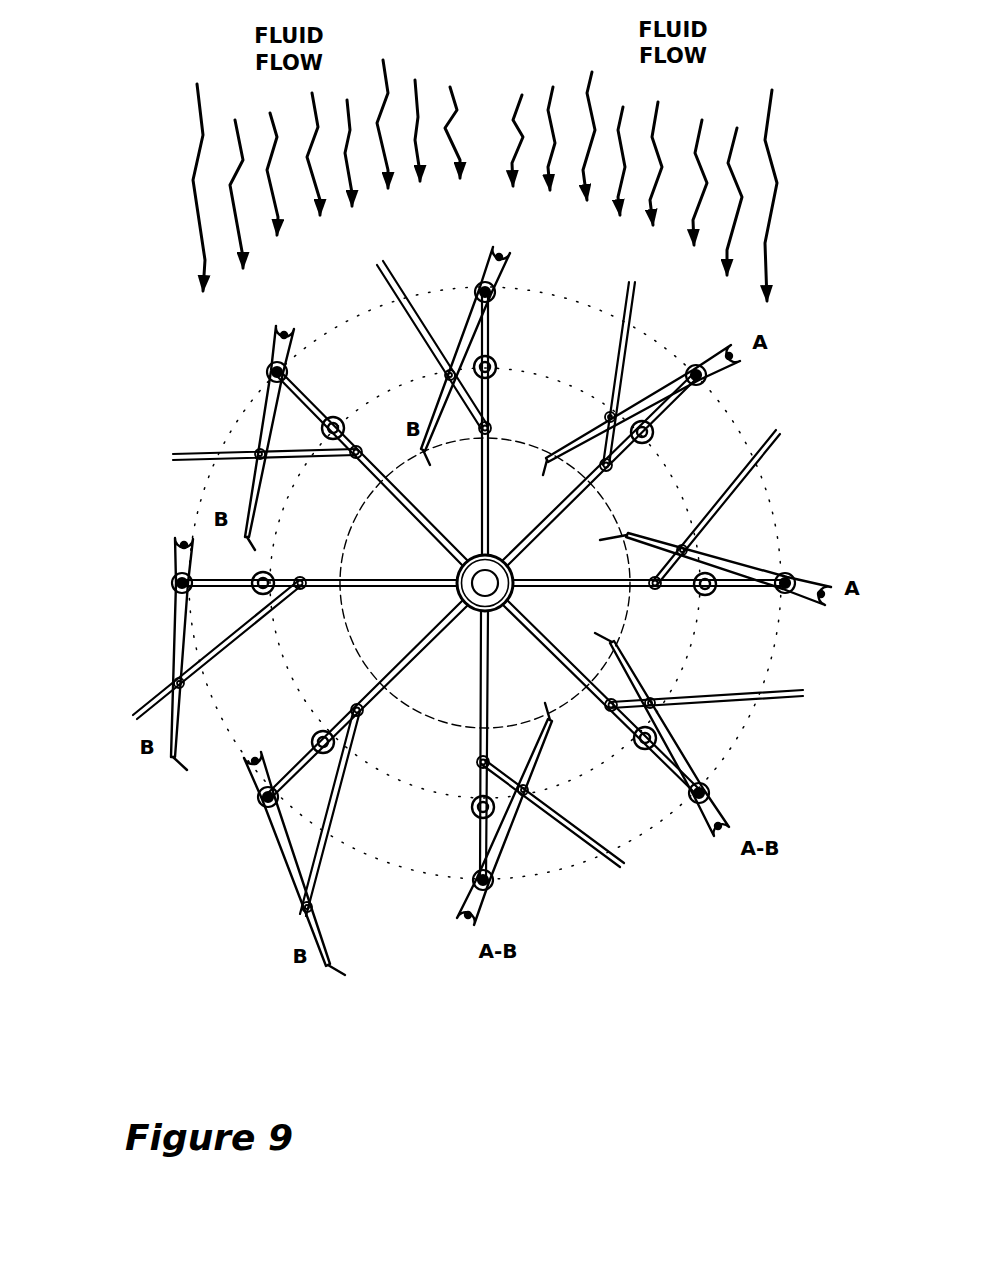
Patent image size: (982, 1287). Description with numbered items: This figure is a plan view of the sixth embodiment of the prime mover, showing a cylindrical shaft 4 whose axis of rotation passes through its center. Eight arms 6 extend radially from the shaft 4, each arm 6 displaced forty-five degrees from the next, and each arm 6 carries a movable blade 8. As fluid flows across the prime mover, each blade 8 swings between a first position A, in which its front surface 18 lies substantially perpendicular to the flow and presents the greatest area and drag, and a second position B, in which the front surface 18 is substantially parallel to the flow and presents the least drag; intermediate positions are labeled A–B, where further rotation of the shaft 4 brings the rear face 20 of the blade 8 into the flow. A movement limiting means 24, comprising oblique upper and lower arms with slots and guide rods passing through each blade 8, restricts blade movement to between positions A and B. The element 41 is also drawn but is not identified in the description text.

The shaft 4 is at (455, 573).
The arm 6 is at (382, 668).
The blade 8 is at (258, 415).
The front surface 18 is at (280, 865).
The rear face 20 is at (322, 908).
The movement limiting means 24 is at (342, 842).
The stop 41 is at (172, 770).